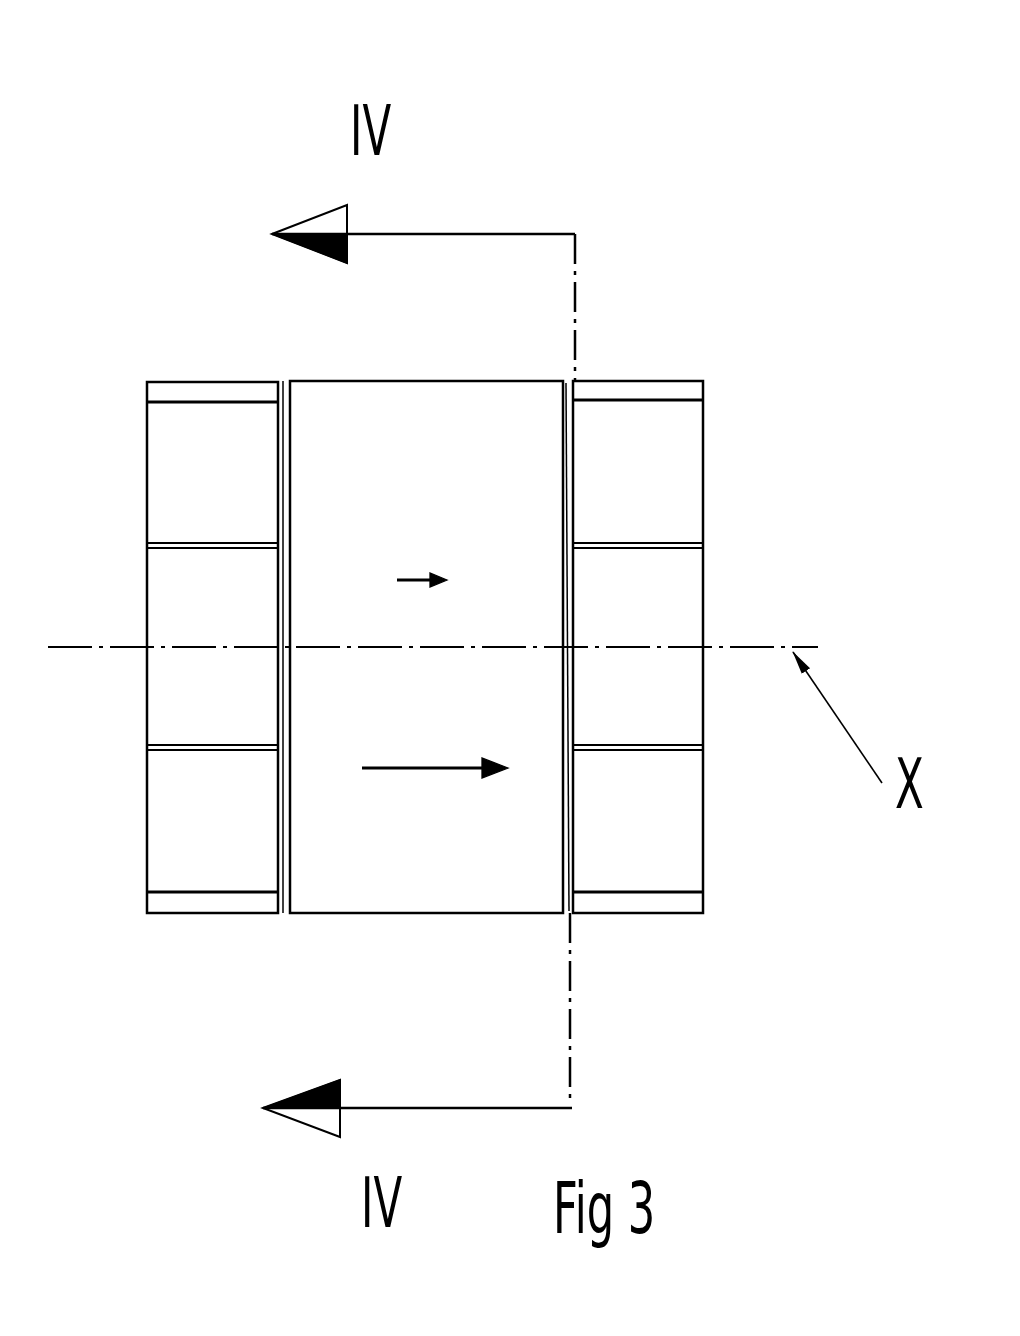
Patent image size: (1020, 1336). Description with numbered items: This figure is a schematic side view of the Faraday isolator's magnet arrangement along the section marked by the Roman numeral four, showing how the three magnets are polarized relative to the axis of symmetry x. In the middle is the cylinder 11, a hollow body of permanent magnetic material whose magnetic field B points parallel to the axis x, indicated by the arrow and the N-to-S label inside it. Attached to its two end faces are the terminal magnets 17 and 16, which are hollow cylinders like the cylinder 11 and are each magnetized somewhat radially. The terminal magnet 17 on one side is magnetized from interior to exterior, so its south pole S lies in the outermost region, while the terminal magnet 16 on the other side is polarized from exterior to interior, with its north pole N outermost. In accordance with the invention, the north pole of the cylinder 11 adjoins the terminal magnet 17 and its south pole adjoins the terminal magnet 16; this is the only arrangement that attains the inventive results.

The cylinder 11 is at (432, 380).
The terminal magnet 16 is at (643, 378).
The terminal magnet 17 is at (208, 380).